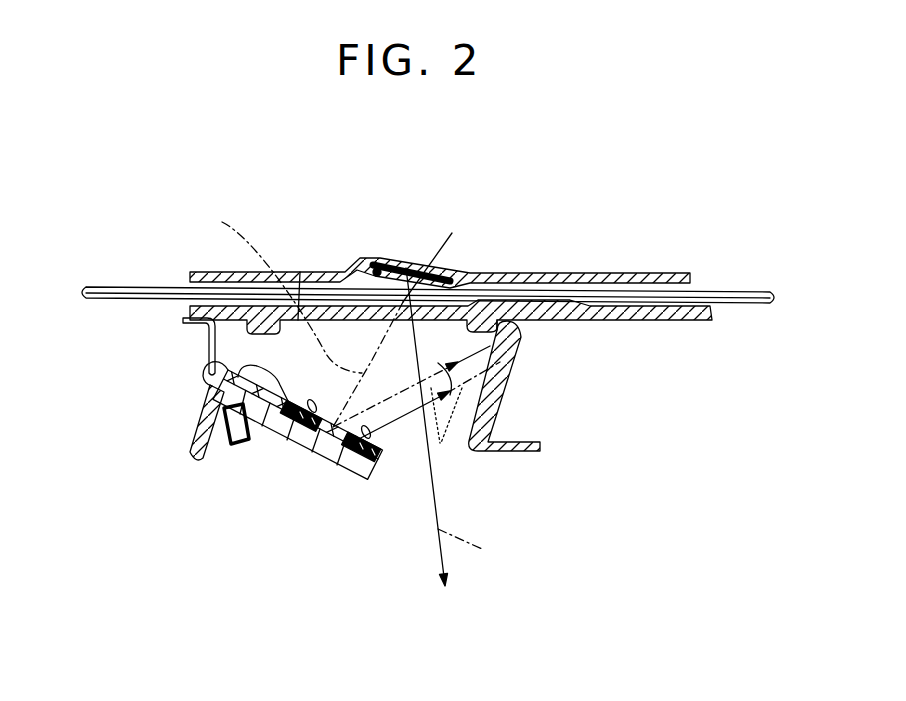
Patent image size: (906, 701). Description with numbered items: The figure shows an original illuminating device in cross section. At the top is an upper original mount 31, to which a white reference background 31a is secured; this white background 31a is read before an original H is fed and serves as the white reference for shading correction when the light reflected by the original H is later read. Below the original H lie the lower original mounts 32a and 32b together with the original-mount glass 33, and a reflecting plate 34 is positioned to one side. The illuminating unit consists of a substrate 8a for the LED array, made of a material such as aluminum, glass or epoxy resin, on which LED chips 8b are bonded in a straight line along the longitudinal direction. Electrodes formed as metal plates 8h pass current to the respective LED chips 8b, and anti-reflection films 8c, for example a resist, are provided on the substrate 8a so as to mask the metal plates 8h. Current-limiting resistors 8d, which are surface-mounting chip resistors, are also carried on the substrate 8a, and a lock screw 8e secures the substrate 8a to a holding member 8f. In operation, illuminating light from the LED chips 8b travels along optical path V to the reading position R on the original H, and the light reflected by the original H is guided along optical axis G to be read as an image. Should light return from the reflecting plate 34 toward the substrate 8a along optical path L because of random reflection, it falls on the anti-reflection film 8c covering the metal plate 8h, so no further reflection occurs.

The upper original mount 31 is at (552, 276).
The white reference background 31a is at (378, 257).
The lower original mount 32a is at (655, 321).
The lower original mount 32b is at (196, 330).
The original-mount glass 33 is at (300, 272).
The reflecting plate 34 is at (531, 431).
The substrate 8a is at (373, 450).
The LED chips 8b is at (347, 443).
The anti-reflection films 8c is at (362, 445).
The current-limiting resistors 8d is at (262, 437).
The lock screw 8e is at (210, 384).
The holding member 8f is at (192, 448).
The electrodes (metal plates) 8h is at (350, 440).
The original H is at (714, 292).
The optical path V is at (280, 288).
The reading position R is at (416, 325).
The optical path L is at (429, 427).
The optical axis G is at (473, 546).